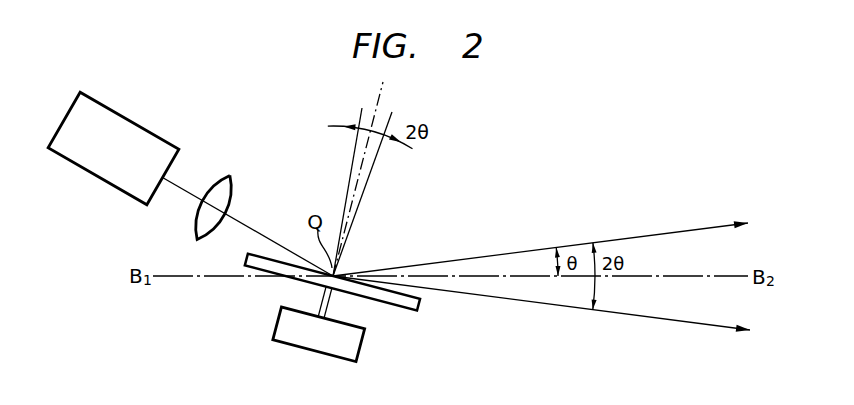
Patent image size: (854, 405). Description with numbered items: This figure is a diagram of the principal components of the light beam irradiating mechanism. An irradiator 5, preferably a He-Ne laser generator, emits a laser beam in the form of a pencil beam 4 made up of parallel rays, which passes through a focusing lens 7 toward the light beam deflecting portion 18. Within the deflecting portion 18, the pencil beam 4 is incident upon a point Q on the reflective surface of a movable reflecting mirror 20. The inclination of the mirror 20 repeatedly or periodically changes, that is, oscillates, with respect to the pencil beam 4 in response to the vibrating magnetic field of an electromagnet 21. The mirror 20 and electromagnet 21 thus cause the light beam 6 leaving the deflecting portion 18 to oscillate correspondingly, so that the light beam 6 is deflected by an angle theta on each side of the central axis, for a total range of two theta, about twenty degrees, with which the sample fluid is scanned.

The pencil beam 4 is at (182, 185).
The irradiator 5 is at (122, 123).
The light beam 6 is at (663, 233).
The focusing lens 7 is at (230, 177).
The light beam deflecting portion 18 is at (360, 312).
The movable reflecting mirror 20 is at (422, 302).
The electromagnet 21 is at (302, 342).